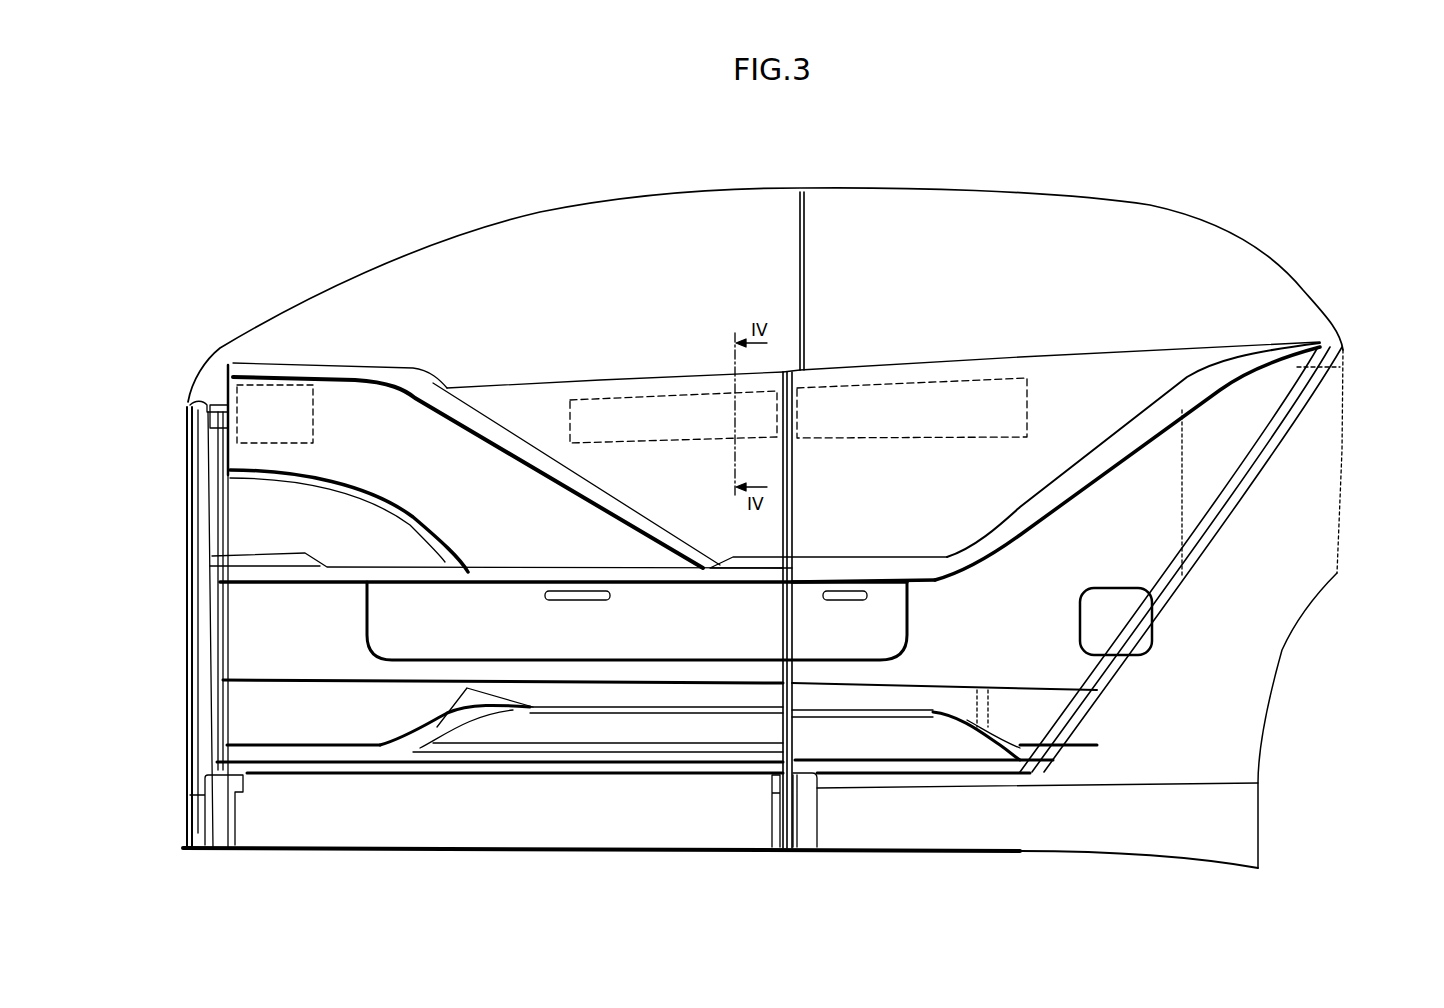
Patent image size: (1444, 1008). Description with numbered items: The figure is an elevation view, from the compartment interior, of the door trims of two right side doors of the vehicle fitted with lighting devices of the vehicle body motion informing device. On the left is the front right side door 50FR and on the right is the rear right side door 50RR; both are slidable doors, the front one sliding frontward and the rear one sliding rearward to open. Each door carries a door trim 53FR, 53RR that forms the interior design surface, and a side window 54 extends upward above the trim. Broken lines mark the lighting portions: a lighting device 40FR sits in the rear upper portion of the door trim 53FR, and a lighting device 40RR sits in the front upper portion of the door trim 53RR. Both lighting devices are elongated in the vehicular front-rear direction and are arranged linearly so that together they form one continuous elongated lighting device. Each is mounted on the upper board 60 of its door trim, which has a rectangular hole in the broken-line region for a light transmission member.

The front right side door 50FR is at (427, 143).
The rear right side door 50RR is at (1219, 125).
The lighting device 40FR is at (687, 397).
The lighting device 40RR is at (917, 385).
The side window 54 is at (395, 277).
The upper board 60 is at (520, 400).
The door trim 53FR is at (243, 512).
The door trim 53RR is at (1222, 465).